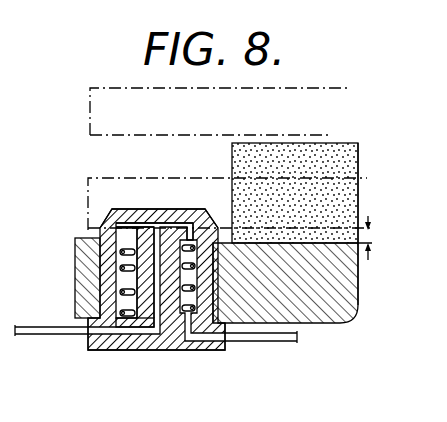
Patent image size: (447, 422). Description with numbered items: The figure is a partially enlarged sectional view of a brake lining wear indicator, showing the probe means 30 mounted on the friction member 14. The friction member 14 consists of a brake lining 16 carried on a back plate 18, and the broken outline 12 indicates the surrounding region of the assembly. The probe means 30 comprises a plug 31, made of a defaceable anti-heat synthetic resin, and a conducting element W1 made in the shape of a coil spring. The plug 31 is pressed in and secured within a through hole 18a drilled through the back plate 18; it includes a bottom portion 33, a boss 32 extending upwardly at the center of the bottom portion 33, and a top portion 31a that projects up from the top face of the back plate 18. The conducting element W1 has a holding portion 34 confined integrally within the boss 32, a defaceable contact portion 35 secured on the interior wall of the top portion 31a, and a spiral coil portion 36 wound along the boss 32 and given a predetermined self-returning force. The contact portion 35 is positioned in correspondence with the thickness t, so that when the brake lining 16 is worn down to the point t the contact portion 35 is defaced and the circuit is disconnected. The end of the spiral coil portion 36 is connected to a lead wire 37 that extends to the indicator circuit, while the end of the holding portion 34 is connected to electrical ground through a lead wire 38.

The envelope outline 12 is at (110, 85).
The friction member 14 is at (362, 207).
The brake lining 16 is at (345, 173).
The back plate 18 is at (322, 318).
The through hole 18a is at (212, 262).
The probe means 30 is at (85, 229).
The plug 31 is at (102, 227).
The top portion 31a is at (205, 212).
The boss 32 is at (140, 225).
The bottom portion 33 is at (175, 347).
The holding portion 34 is at (134, 333).
The defaceable portion 35 is at (171, 224).
The spiral coil portion 36 is at (118, 264).
The lead wire 37 is at (245, 341).
The lead wire 38 is at (40, 326).
The conducting element W1 is at (97, 238).
The thickness t is at (371, 237).